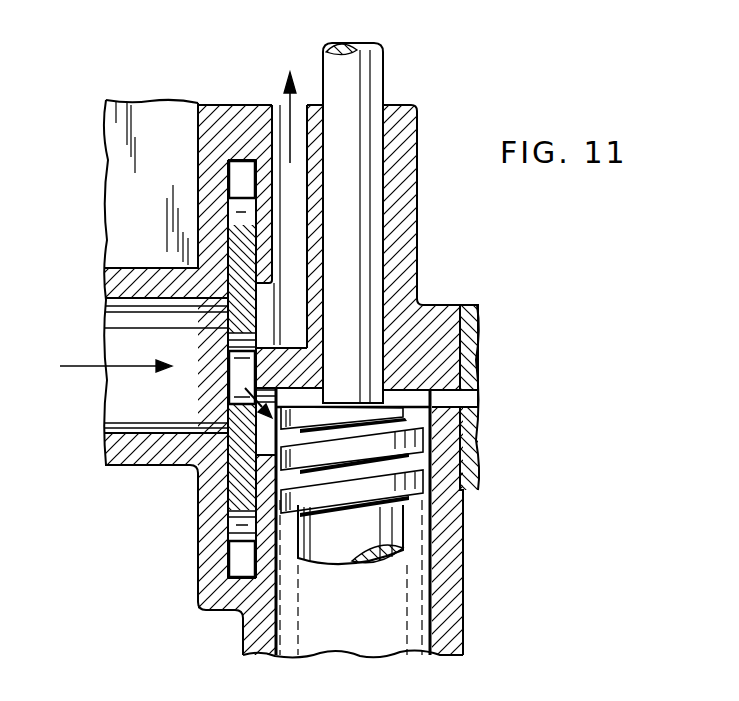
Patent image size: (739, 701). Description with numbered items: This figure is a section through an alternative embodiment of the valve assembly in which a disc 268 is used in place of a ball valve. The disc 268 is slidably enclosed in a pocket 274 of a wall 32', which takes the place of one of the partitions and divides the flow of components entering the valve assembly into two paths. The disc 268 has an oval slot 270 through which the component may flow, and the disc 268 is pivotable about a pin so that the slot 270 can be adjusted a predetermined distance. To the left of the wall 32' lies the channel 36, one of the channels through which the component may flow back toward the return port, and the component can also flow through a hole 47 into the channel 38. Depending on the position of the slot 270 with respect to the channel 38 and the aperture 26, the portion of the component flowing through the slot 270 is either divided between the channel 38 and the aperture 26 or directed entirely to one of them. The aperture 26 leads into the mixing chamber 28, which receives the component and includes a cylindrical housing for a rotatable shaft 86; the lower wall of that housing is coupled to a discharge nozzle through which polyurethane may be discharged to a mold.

The wall 32' is at (291, 359).
The channel 36 is at (123, 177).
The channel 38 is at (282, 127).
The pocket 274 is at (242, 173).
The disc 268 is at (237, 255).
The hole 47 is at (133, 342).
The oval slot 270 is at (243, 379).
The aperture 26 is at (264, 398).
The rotatable shaft 86 is at (392, 530).
The mixing chamber 28 is at (373, 603).